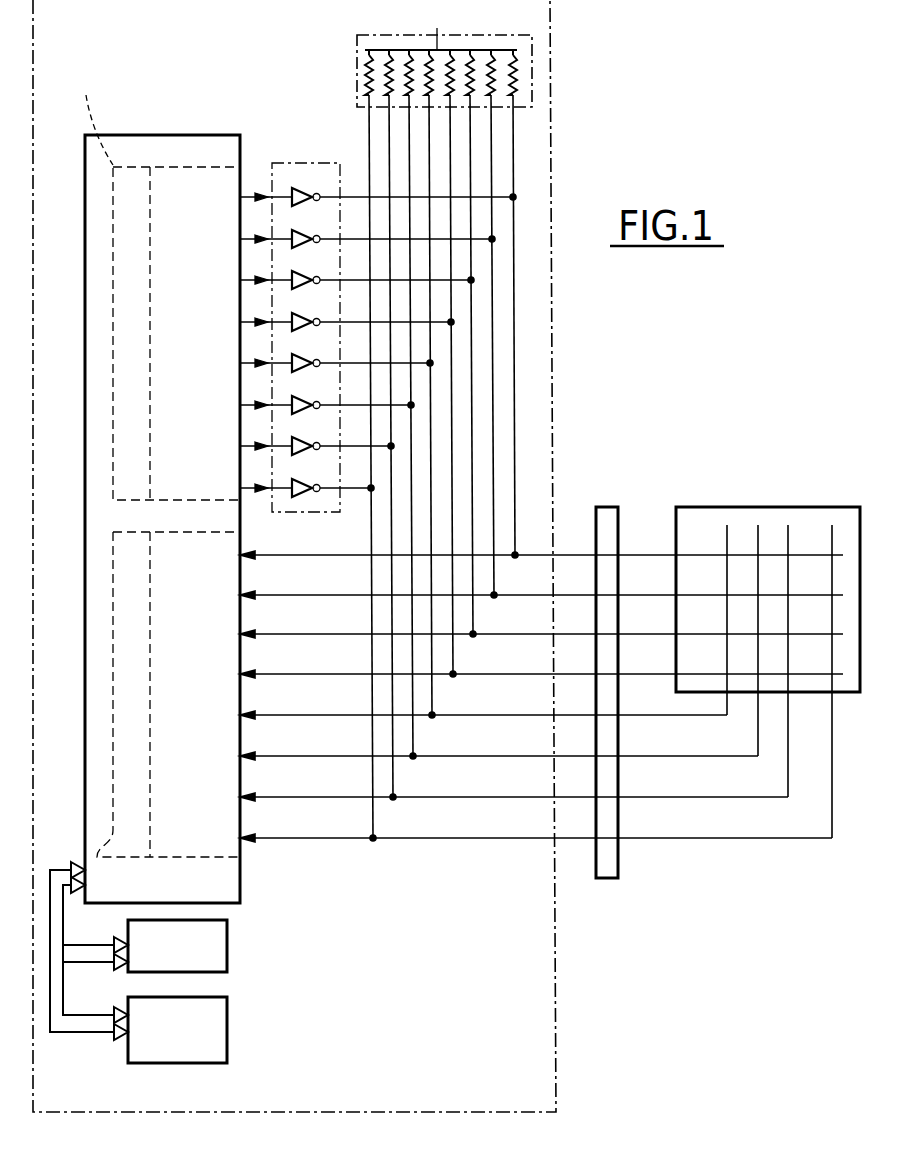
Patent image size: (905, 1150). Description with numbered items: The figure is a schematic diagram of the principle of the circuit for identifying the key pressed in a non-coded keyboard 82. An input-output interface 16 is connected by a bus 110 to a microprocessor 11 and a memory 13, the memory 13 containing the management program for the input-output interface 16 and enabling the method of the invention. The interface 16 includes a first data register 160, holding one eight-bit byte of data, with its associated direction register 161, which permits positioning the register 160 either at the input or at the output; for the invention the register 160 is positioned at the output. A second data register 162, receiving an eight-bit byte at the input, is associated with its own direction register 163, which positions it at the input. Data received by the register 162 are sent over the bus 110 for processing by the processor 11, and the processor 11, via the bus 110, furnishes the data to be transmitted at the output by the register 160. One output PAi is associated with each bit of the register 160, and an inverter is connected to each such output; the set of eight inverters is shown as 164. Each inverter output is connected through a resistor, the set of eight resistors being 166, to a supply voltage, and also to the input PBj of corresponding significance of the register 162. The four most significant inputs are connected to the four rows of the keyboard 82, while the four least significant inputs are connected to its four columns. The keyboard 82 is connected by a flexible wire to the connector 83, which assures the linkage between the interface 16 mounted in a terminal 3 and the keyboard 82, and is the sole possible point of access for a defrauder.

The terminal 3 is at (546, 1006).
The microprocessor 11 is at (222, 1040).
The memory 13 is at (222, 948).
The input-output interface 16 is at (106, 134).
The bus 110 is at (80, 1030).
The first data register 160 is at (203, 167).
The direction register 161 is at (148, 167).
The second data register 162 is at (212, 860).
The direction register 163 is at (120, 630).
The set of eight inverters 164 is at (300, 163).
The set of eight resistors 166 is at (532, 57).
The non-coded keyboard 82 is at (770, 507).
The connector 83 is at (613, 512).